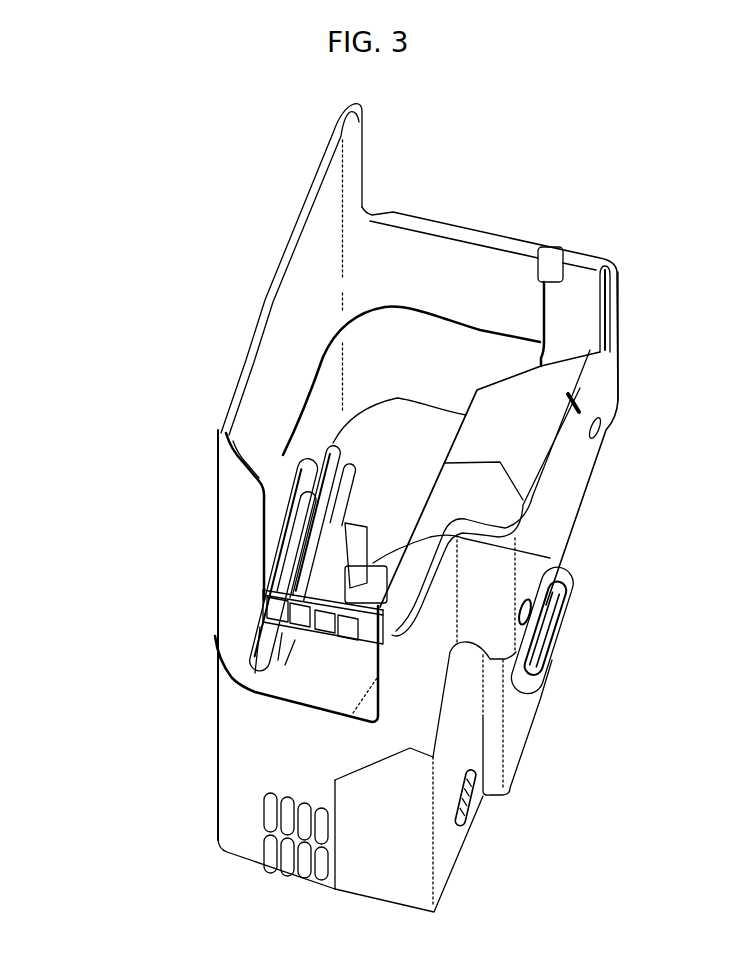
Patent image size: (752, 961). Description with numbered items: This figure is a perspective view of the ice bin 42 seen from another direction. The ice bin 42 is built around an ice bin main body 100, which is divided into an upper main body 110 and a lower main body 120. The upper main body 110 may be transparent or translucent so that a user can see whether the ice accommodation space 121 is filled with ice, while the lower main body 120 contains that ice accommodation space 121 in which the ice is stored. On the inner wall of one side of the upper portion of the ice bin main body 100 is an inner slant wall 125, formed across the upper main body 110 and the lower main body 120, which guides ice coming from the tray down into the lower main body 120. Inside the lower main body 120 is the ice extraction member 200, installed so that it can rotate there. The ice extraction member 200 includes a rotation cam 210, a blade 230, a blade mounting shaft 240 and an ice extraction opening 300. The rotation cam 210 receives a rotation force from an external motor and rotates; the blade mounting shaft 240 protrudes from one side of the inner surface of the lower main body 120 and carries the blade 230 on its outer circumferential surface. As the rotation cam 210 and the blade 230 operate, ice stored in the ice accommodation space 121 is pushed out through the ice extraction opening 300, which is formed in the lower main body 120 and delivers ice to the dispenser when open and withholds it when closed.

The ice bin 42 is at (206, 143).
The ice bin main body 100 is at (104, 548).
The upper main body 110 is at (235, 563).
The lower main body 120 is at (235, 756).
The ice accommodation space 121 is at (401, 441).
The inner slant wall 125 is at (530, 450).
The ice extraction member 200 is at (292, 461).
The rotation cam 210 is at (292, 547).
The blade 230 is at (336, 446).
The blade mounting shaft 240 is at (550, 558).
The ice extraction opening 300 is at (545, 652).